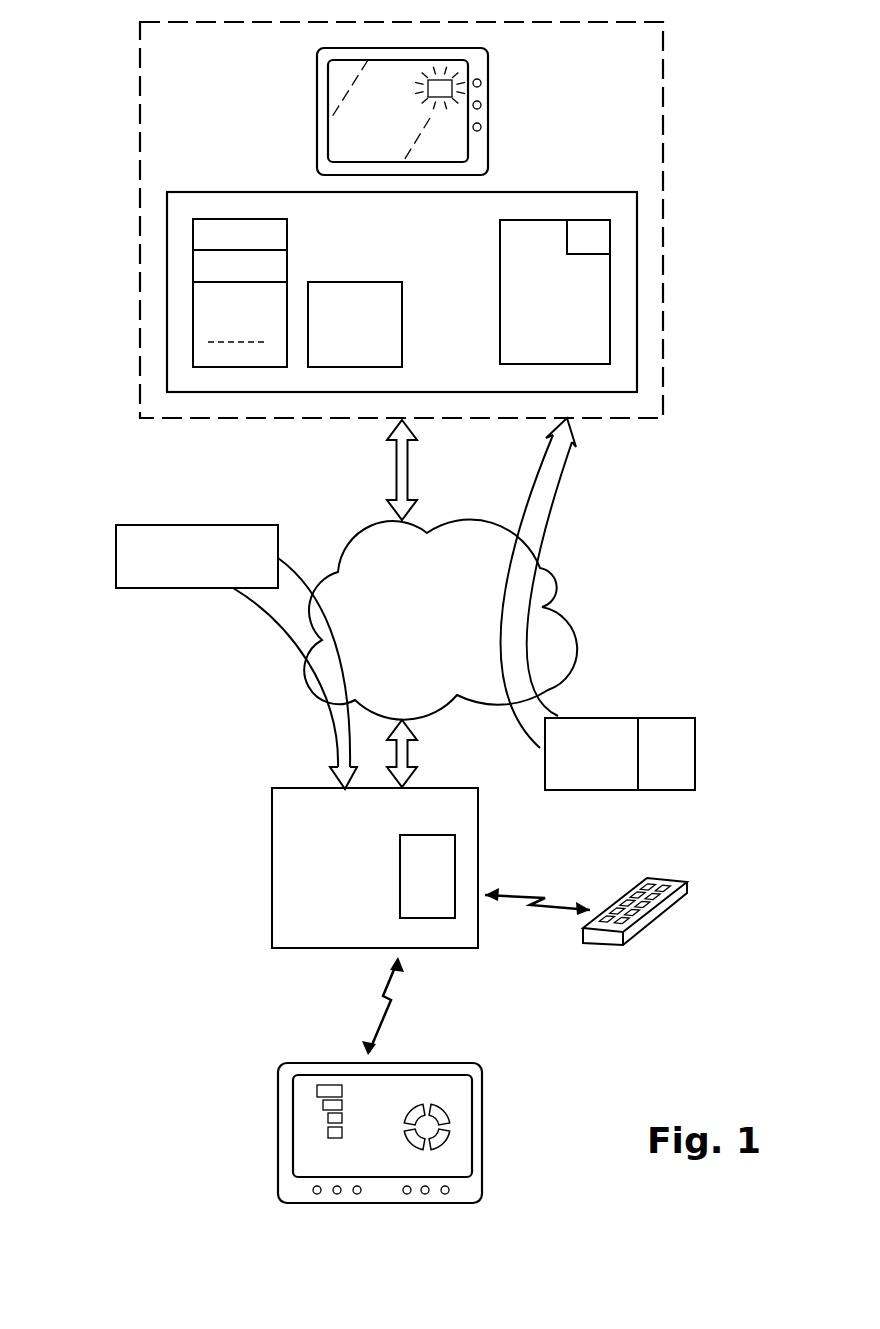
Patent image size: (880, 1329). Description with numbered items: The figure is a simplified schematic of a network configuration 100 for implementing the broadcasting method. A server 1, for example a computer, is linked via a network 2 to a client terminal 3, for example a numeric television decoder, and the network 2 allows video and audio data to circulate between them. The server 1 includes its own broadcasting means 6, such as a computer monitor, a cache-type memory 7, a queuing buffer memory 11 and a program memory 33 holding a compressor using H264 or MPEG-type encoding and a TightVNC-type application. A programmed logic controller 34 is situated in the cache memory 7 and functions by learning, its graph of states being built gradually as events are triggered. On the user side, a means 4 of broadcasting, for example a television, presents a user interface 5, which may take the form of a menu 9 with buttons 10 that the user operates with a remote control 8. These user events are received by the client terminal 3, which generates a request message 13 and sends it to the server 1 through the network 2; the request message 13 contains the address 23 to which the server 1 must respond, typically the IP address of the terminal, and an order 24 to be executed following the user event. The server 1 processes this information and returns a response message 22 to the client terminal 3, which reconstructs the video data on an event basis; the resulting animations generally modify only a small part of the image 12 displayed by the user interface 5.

The network configuration 100 is at (116, 82).
The server 1 is at (183, 418).
The broadcasting means 6 is at (488, 135).
The program memory 33 is at (275, 219).
The queuing buffer memory 11 is at (380, 282).
The cache-type memory 7 is at (600, 307).
The programmed logic controller 34 is at (588, 237).
The response message 22 is at (140, 525).
The network 2 is at (582, 628).
The request message 13 is at (620, 773).
The address 23 is at (588, 790).
The order 24 is at (658, 790).
The client terminal 3 is at (272, 827).
The remote control 8 is at (652, 920).
The means of broadcasting 4 is at (403, 1156).
The user interface 5 is at (372, 1163).
The menu 9 is at (317, 1090).
The buttons 10 is at (327, 1110).
The image 12 is at (452, 1155).